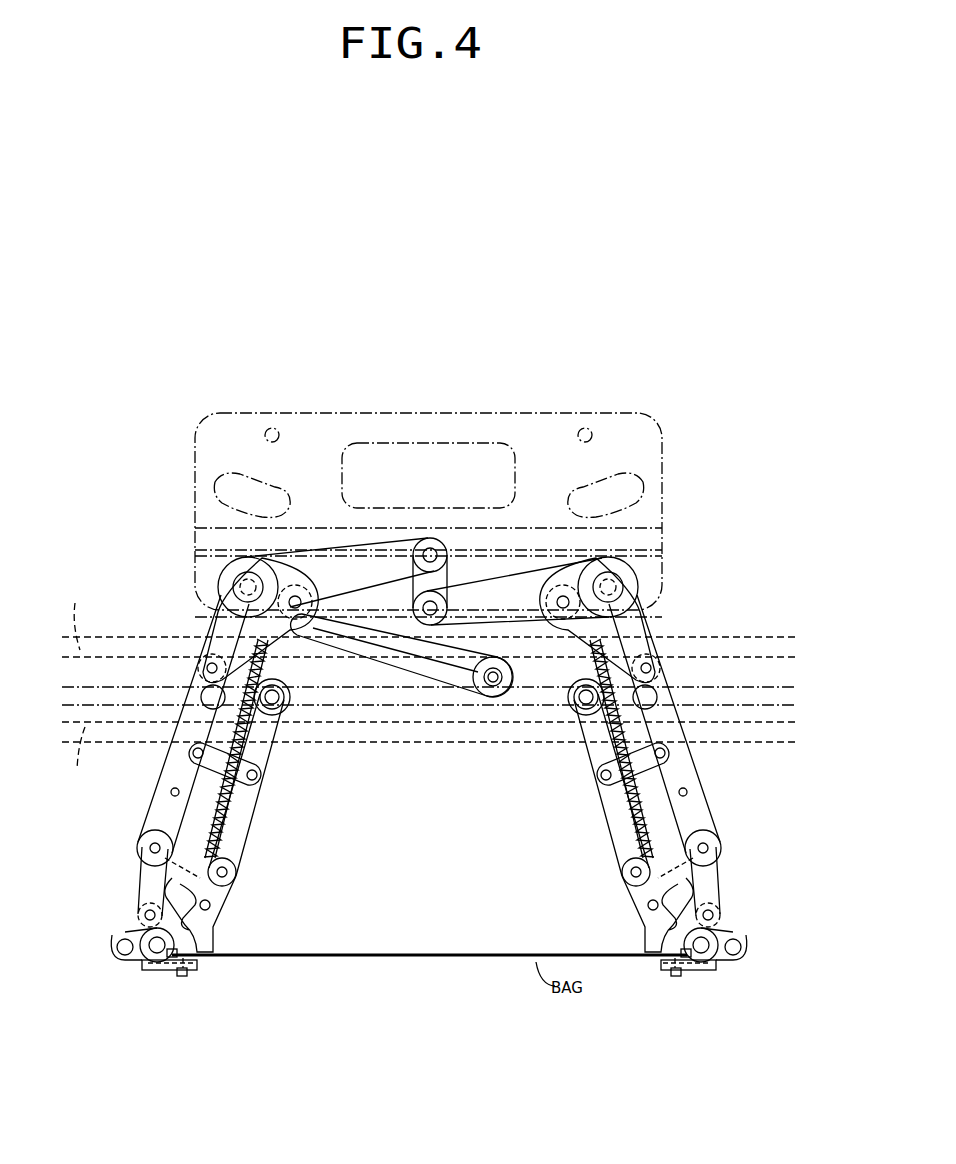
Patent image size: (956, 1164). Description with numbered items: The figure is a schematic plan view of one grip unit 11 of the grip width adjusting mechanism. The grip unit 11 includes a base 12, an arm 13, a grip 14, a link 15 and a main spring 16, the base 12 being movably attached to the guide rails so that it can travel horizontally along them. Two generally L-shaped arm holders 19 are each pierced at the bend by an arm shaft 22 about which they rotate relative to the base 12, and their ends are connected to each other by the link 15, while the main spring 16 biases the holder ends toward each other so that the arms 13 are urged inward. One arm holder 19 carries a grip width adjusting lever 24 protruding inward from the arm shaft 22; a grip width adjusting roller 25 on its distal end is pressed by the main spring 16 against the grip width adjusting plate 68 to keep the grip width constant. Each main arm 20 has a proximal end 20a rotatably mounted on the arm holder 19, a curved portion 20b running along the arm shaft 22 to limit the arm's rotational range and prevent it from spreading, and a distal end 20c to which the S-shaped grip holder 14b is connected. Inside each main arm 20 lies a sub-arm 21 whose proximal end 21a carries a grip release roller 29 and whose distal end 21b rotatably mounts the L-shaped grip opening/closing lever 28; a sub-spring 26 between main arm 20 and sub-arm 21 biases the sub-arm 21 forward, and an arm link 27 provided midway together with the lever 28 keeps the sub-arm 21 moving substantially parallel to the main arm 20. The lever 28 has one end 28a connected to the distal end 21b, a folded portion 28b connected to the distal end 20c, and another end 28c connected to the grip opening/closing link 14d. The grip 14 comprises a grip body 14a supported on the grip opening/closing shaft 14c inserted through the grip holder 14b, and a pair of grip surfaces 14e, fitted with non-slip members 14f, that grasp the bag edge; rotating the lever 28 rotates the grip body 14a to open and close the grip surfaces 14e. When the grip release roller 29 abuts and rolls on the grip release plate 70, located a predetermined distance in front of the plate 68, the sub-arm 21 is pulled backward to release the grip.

The grip unit 11 is at (428, 470).
The base 12 is at (540, 438).
The arm 13 is at (425, 730).
The grip 14 is at (432, 959).
The grip body 14a is at (146, 972).
The grip holder 14b is at (210, 912).
The grip opening/closing shaft 14c is at (142, 950).
The grip opening/closing link 14d is at (133, 926).
The grip surfaces 14e is at (193, 956).
The non-slip member 14f is at (196, 967).
The link 15 is at (430, 625).
The main spring 16 is at (372, 695).
The arm holder 19 is at (307, 565).
The main arm 20 is at (178, 753).
The proximal end 20a is at (290, 628).
The curved portion 20b is at (232, 648).
The distal end 20c is at (143, 843).
The sub-arm 21 is at (429, 790).
The proximal end 21a is at (279, 708).
The distal end 21b is at (235, 872).
The arm shaft 22 is at (248, 587).
The grip width adjusting lever 24 is at (385, 660).
The grip width adjusting roller 25 is at (482, 698).
The sub-spring 26 is at (227, 807).
The arm link 27 is at (200, 762).
The grip opening/closing lever 28 is at (439, 878).
The one end 28a is at (233, 879).
The folded portion 28b is at (153, 858).
The other end 28c is at (138, 918).
The grip release roller 29 is at (291, 708).
The grip width adjusting plate 68 is at (428, 621).
The grip release plate 70 is at (428, 756).